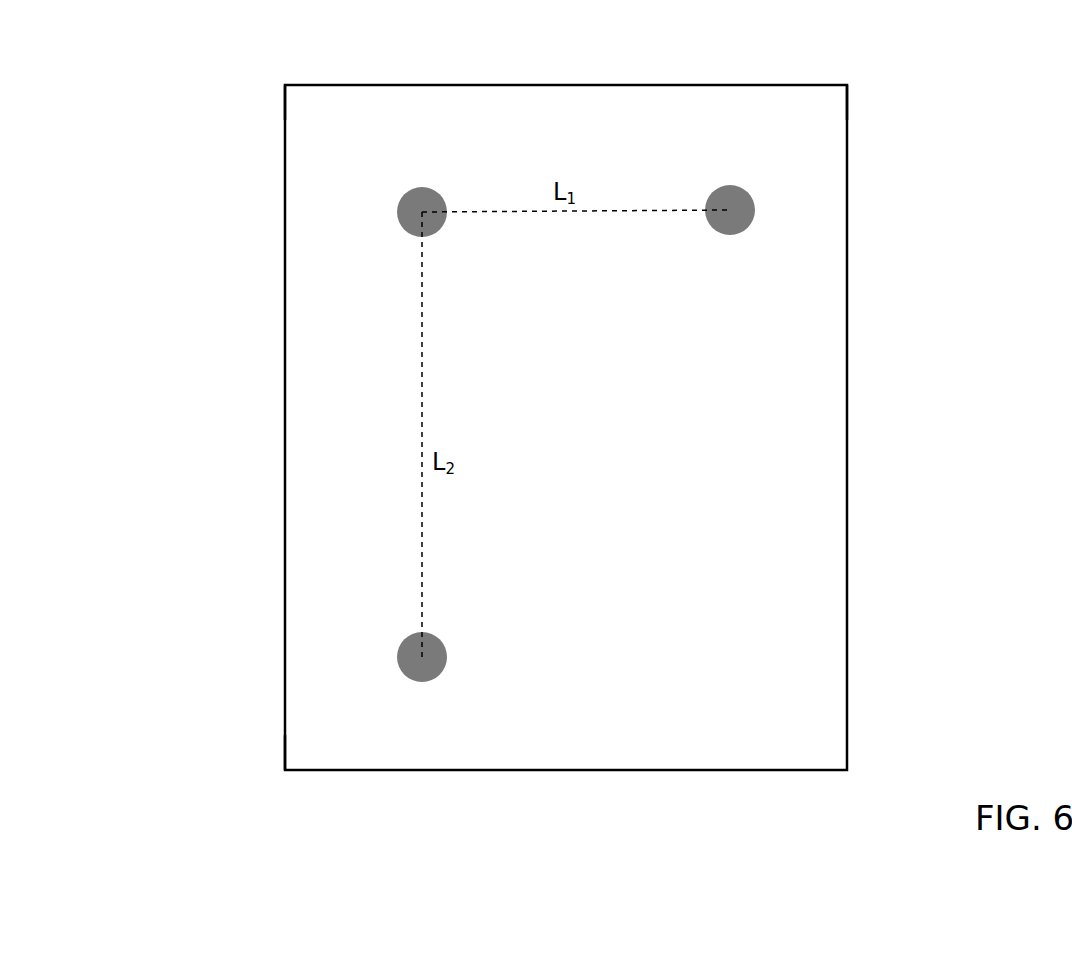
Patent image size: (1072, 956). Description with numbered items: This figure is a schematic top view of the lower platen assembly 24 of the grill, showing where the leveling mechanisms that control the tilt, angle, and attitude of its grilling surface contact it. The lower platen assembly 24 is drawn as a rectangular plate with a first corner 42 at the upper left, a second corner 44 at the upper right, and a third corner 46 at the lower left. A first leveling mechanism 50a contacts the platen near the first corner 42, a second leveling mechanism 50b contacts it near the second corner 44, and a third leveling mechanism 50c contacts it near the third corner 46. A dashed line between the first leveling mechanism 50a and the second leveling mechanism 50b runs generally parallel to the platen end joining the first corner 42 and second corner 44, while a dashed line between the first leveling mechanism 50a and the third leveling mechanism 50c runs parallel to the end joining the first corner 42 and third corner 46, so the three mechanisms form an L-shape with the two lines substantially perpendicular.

The lower platen assembly 24 is at (847, 388).
The first corner 42 is at (285, 85).
The second corner 44 is at (847, 85).
The third corner 46 is at (285, 770).
The first leveling mechanism 50a is at (412, 200).
The second leveling mechanism 50b is at (725, 222).
The third leveling mechanism 50c is at (433, 662).